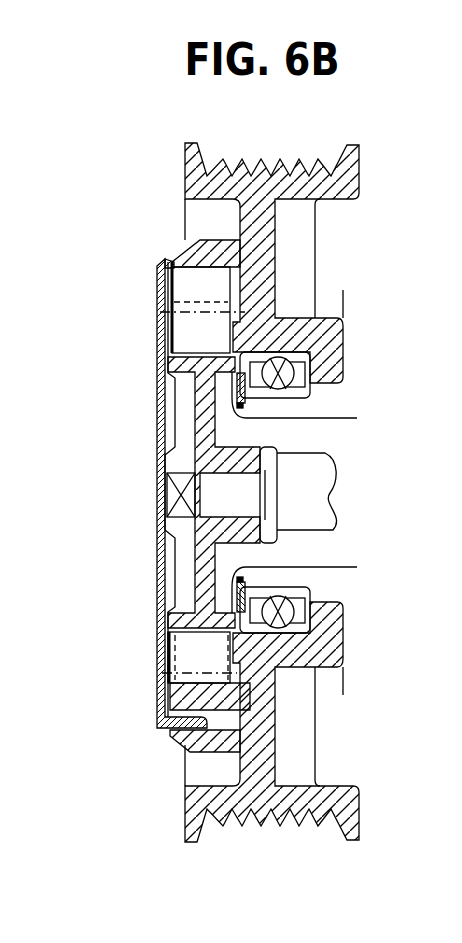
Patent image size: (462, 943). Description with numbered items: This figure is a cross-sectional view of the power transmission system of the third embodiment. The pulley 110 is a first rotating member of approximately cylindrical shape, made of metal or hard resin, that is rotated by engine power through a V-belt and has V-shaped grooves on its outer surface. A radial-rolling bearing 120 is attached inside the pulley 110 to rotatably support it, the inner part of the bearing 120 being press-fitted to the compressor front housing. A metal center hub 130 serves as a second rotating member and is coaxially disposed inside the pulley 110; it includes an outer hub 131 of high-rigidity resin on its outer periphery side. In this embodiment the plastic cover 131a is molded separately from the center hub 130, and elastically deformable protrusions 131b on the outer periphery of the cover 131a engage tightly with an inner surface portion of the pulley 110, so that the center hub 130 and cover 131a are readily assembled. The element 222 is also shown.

The pulley 110 is at (360, 163).
The radial-rolling bearing 120 is at (313, 378).
The center hub 130 is at (193, 400).
The outer hub 131 is at (163, 456).
The cover 131a is at (161, 697).
The protrusions 131b is at (177, 740).
The cover 222 is at (157, 262).